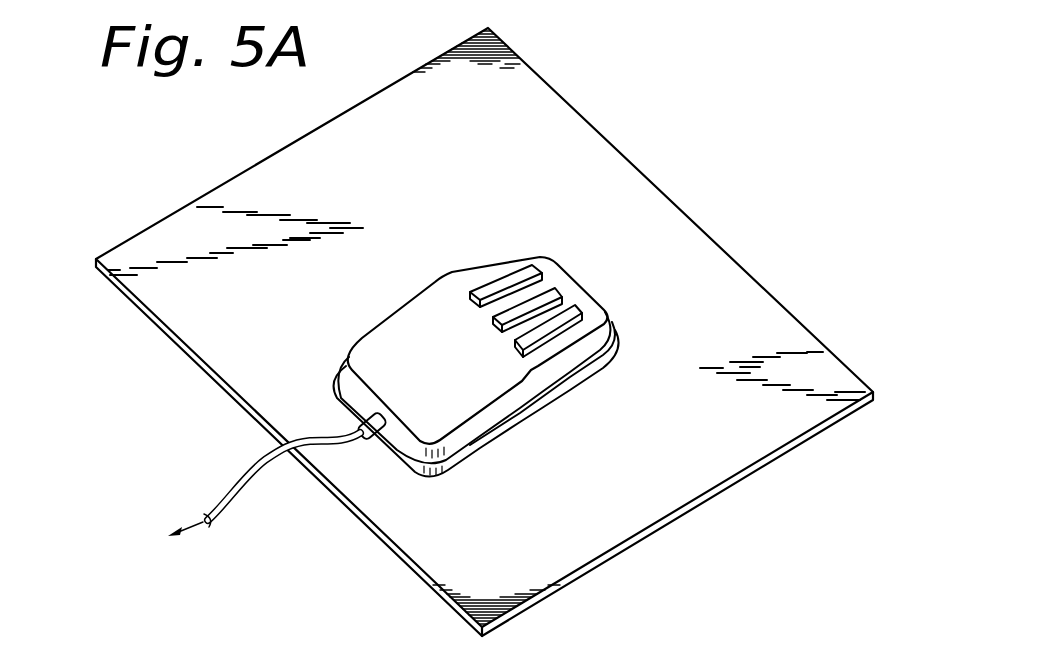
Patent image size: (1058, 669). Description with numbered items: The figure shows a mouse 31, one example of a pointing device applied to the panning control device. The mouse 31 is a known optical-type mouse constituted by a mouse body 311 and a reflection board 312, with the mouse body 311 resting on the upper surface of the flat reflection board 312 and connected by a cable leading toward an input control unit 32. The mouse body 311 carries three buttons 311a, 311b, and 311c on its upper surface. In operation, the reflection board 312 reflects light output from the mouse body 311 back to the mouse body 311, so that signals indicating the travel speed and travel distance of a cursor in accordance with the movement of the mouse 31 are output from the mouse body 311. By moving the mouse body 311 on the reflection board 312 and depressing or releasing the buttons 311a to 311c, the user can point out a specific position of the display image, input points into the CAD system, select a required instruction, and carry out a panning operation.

The mouse 31 is at (746, 135).
The mouse body 311 is at (458, 407).
The button 311a is at (512, 288).
The button 311b is at (552, 294).
The button 311c is at (570, 307).
The reflection board 312 is at (714, 474).
The input control unit 32 is at (111, 555).